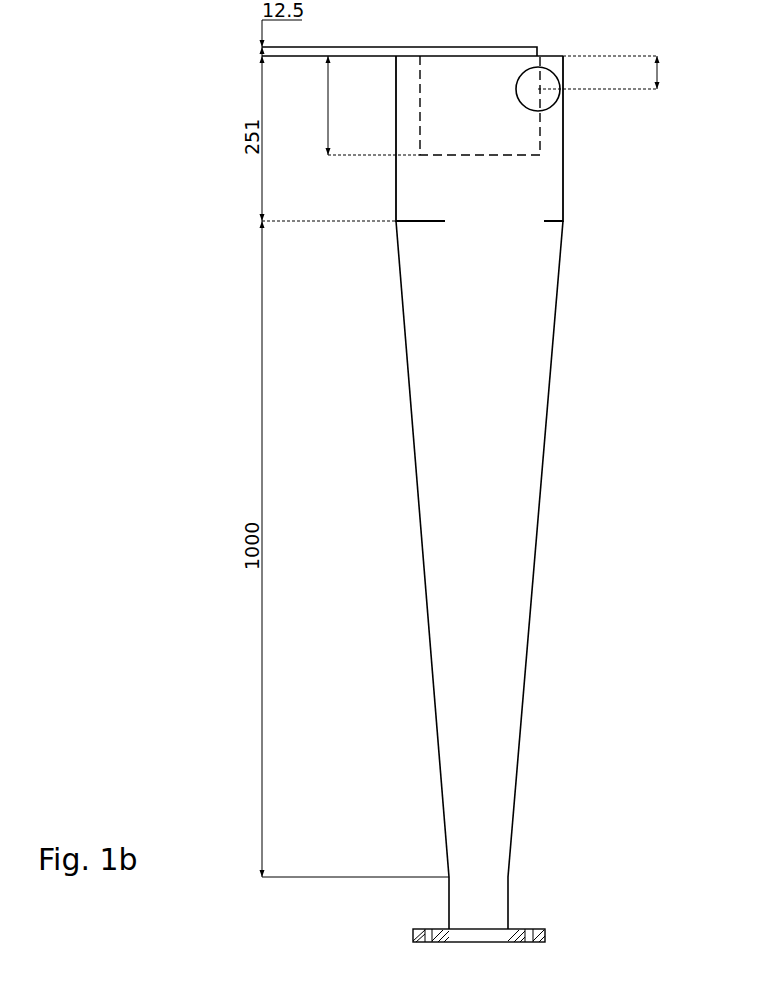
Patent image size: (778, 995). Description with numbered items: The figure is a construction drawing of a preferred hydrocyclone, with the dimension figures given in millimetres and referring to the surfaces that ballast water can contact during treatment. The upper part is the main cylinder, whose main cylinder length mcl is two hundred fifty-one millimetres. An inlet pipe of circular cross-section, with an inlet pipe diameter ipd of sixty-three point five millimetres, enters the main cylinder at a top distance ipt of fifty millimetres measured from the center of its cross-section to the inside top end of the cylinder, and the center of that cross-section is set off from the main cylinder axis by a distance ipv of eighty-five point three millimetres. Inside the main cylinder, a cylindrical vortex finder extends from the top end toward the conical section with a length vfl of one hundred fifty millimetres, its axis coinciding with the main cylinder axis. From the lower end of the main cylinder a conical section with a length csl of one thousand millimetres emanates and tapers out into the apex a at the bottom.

The inlet pipe offset distance ipv is at (412, 31).
The inlet pipe top distance ipt is at (616, 73).
The inlet pipe diameter ipd is at (503, 62).
The main cylinder length mcl is at (381, 138).
The vortex finder length vfl is at (423, 105).
The conical section length csl is at (380, 549).
The apex a is at (479, 909).